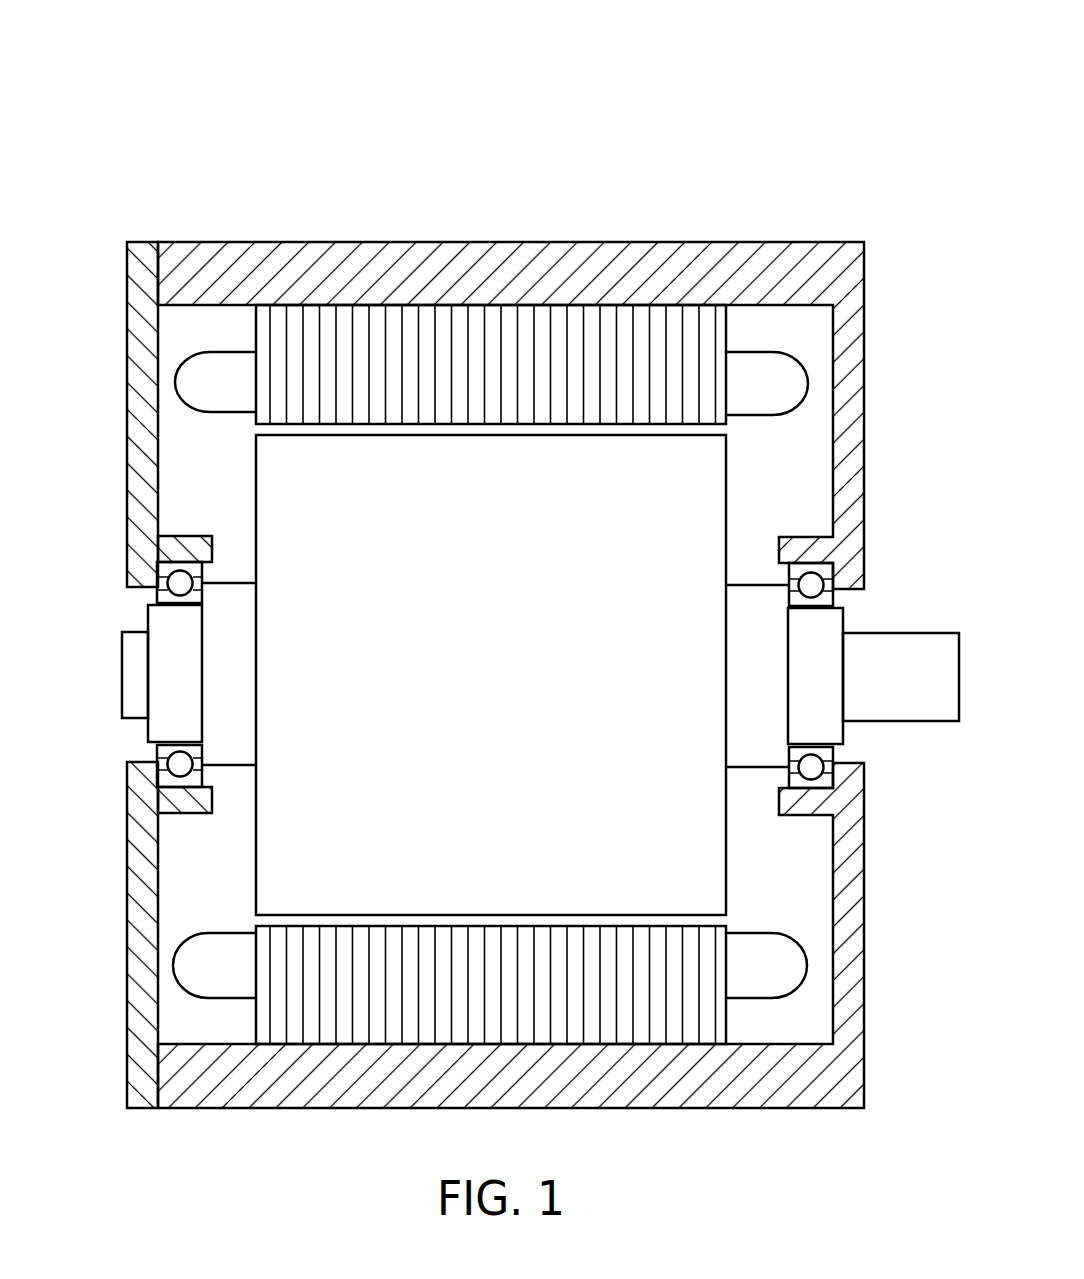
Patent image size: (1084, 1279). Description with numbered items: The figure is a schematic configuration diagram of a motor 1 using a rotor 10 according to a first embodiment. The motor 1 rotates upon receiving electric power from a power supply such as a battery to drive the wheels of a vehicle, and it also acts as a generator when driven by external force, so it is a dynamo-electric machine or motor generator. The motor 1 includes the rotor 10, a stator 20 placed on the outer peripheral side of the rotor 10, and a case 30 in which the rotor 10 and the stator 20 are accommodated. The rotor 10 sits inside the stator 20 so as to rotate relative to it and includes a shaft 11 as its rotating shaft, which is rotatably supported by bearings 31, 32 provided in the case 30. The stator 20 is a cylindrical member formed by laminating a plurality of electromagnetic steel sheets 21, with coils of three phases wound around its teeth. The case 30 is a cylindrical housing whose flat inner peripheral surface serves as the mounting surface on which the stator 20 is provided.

The motor 1 is at (480, 104).
The rotor 10 is at (270, 853).
The shaft 11 is at (922, 650).
The stator 20 is at (293, 1013).
The electromagnetic steel sheets 21 is at (253, 1000).
The case 30 is at (852, 1087).
The bearing 31 is at (155, 787).
The bearing 32 is at (823, 782).